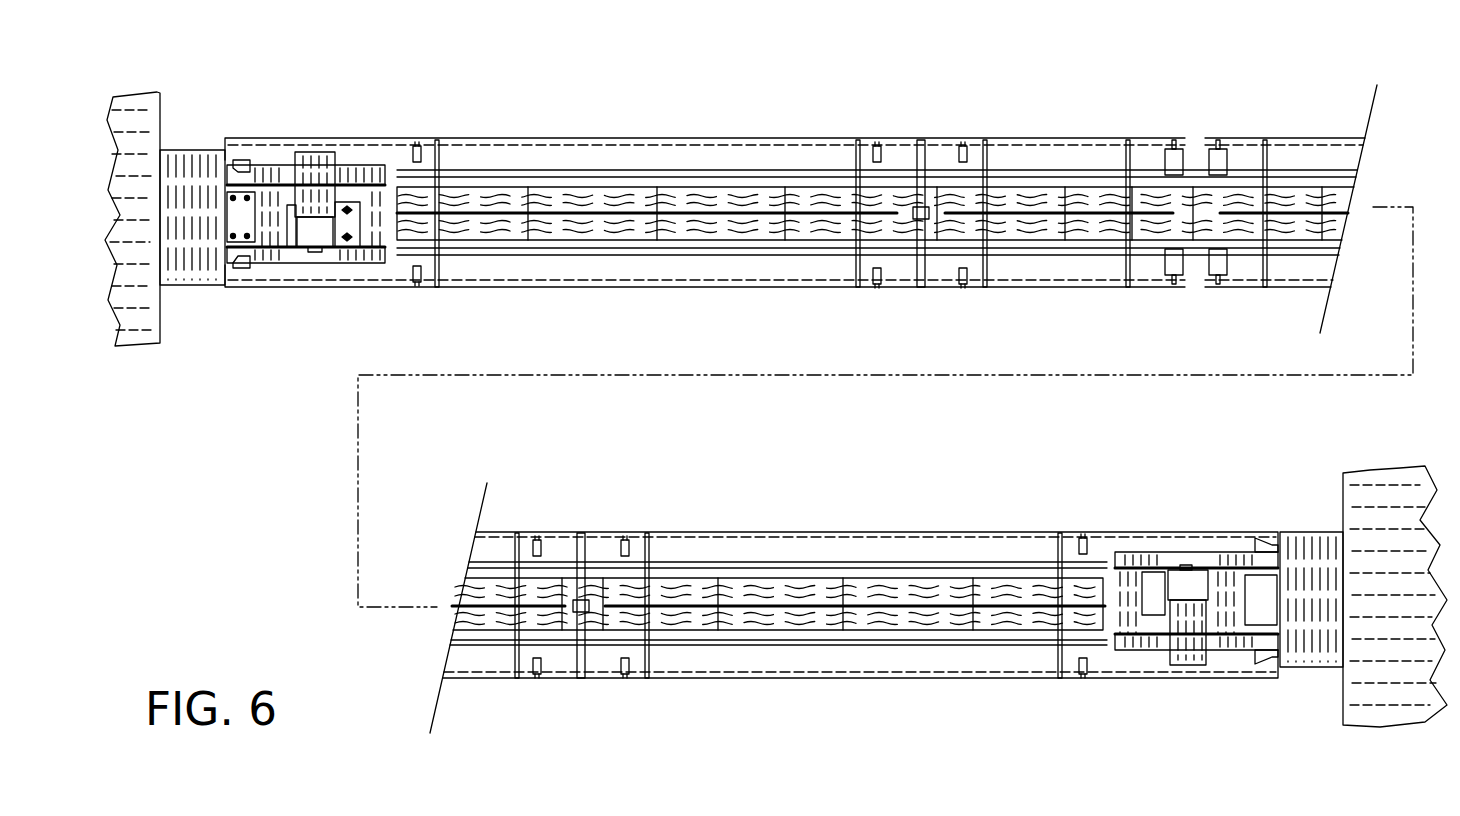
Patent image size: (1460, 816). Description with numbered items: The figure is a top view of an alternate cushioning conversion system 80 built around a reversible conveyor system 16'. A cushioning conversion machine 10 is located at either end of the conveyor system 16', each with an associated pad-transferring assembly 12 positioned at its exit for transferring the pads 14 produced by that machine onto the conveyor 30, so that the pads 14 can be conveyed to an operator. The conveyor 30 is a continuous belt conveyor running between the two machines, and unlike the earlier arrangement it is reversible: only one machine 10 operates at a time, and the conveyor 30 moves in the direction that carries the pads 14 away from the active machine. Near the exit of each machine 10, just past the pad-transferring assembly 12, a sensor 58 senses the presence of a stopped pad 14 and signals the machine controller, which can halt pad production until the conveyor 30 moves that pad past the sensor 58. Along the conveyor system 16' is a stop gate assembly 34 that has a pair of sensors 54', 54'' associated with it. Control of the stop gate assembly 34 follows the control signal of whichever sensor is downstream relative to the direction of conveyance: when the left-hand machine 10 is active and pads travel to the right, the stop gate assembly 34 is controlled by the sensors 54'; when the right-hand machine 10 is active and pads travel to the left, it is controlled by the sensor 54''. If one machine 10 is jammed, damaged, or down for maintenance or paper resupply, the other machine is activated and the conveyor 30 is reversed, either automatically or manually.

The cushioning conversion machine 10 is at (182, 132).
The pad-transferring assembly 12 is at (362, 135).
The pads 14 is at (598, 205).
The reversible conveyor system 16' is at (795, 383).
The conveyor 30 is at (770, 243).
The stop gate assembly 34 is at (922, 288).
The sensor 54' is at (817, 412).
The sensor 54'' is at (729, 398).
The sensor 58 is at (427, 156).
The cushioning conversion system 80 is at (737, 87).